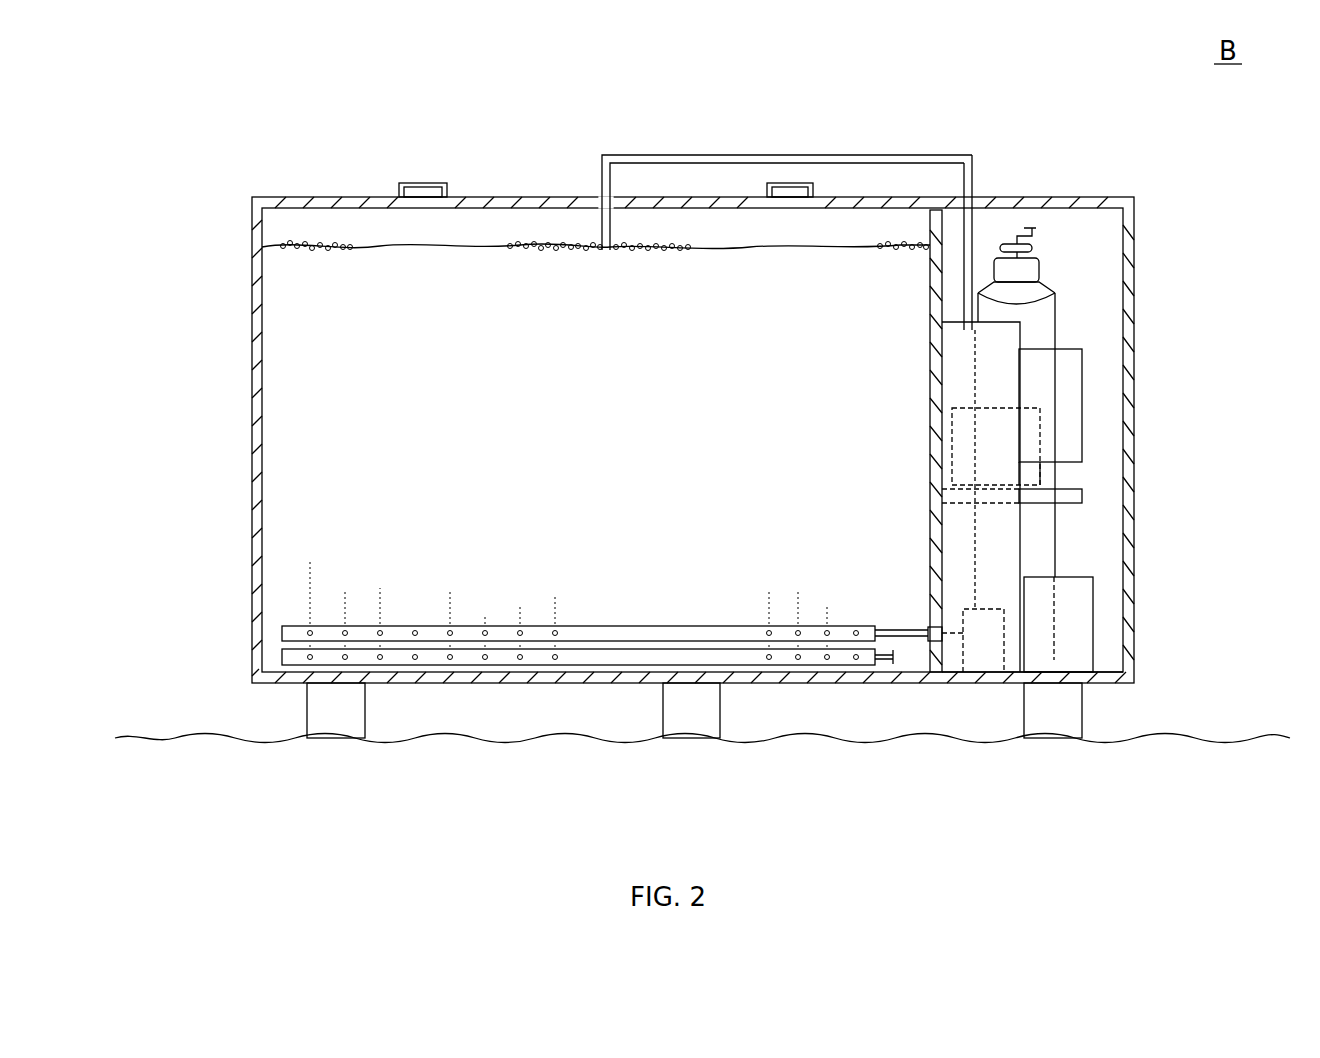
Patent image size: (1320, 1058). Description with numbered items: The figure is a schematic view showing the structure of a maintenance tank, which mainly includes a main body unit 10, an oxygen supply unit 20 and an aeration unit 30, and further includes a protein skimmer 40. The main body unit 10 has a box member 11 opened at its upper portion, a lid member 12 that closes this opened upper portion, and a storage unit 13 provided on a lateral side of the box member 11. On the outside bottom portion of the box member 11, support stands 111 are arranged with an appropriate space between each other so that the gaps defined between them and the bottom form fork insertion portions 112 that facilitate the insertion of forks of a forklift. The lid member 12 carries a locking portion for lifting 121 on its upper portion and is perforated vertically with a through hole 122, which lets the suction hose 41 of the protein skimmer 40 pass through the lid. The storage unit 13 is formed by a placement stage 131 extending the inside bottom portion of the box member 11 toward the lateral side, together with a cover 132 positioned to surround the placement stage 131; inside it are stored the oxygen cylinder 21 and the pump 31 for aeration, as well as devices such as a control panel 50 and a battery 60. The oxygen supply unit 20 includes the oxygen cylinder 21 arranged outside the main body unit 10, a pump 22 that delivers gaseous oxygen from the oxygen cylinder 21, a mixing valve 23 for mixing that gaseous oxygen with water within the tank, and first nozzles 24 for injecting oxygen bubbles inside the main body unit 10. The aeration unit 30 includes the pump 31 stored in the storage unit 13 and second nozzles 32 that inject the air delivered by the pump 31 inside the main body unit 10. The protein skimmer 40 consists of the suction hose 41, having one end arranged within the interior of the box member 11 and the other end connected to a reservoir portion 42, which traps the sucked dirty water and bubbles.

The main body unit 10 is at (695, 443).
The box member 11 is at (250, 468).
The lid member 12 is at (495, 197).
The storage unit 13 is at (1082, 478).
The oxygen supply unit 20 is at (954, 525).
The oxygen cylinder 21 is at (1040, 547).
The pump 22 is at (945, 660).
The mixing valve 23 is at (928, 638).
The first nozzles 24 is at (753, 633).
The aeration unit 30 is at (605, 644).
The pump 31 is at (925, 447).
The second nozzles 32 is at (663, 785).
The protein skimmer 40 is at (788, 327).
The suction hose 41 is at (663, 155).
The reservoir portion 42 is at (950, 345).
The control panel 50 is at (1082, 395).
The battery 60 is at (1113, 624).
The support stands 111 is at (305, 712).
The fork insertion portions 112 is at (413, 707).
The locking portion for lifting 121 is at (413, 183).
The through hole 122 is at (601, 197).
The placement stage 131 is at (1107, 672).
The cover 132 is at (1134, 318).